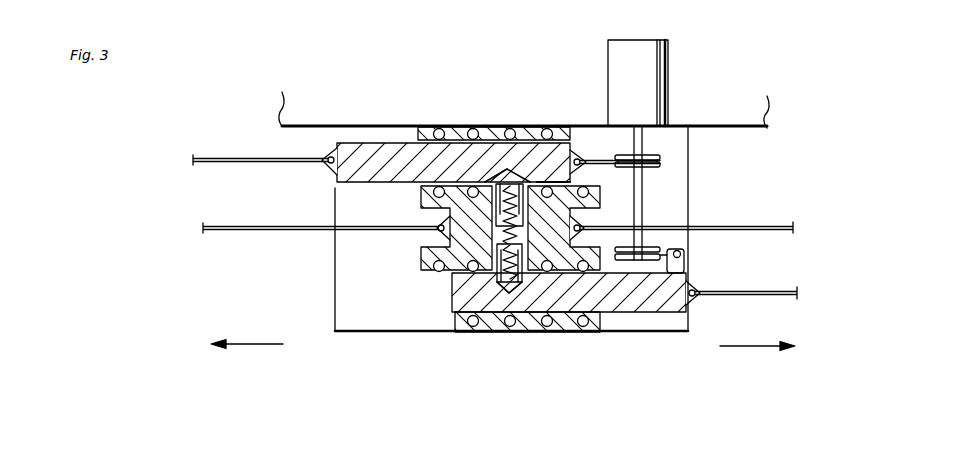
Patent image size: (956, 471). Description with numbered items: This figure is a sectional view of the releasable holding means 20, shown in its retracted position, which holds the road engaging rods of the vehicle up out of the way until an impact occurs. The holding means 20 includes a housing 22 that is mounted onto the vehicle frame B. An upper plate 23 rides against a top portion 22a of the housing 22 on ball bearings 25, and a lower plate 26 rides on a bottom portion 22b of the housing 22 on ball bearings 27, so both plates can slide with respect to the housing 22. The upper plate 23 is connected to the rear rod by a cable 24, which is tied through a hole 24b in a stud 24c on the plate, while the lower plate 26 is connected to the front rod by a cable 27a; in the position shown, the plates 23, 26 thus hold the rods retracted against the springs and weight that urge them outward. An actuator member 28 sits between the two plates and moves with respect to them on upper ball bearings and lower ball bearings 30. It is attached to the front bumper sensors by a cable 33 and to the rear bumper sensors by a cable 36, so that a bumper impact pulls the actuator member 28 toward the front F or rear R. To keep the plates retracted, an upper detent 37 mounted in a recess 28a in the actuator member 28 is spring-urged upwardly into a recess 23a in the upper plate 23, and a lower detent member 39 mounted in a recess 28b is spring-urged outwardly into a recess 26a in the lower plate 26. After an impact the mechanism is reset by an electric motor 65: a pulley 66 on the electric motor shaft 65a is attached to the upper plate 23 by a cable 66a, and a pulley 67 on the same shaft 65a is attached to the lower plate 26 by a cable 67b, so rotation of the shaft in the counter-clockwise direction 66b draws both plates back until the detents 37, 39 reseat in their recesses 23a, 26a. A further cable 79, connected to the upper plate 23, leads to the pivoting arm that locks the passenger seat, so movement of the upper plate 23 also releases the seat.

The holding means 20 is at (566, 28).
The vehicle frame B is at (748, 128).
The electric motor 65 is at (637, 40).
The electric motor shaft 65a is at (648, 185).
The pulley 66 is at (662, 159).
The cable 66a is at (592, 158).
The counter-clockwise direction 66b is at (622, 188).
The pulley 67 is at (662, 243).
The cable 67b is at (685, 265).
The housing 22 is at (356, 333).
The top portion of housing 22a is at (492, 127).
The bottom portion of housing 22b is at (557, 332).
The upper plate 23 is at (366, 145).
The recess 23a is at (547, 180).
The cable 24 is at (218, 156).
The hole 24b is at (330, 156).
The stud 24c is at (322, 168).
The ball bearings 25 is at (443, 127).
The lower plate 26 is at (641, 300).
The recess 26a is at (522, 332).
The ball bearings 27 is at (562, 332).
The cable 27a is at (758, 292).
The actuator member 28 is at (420, 197).
The recess 28a is at (492, 182).
The recess 28b is at (493, 278).
The lower ball bearings 30 is at (435, 270).
The cable 33 is at (785, 226).
The cable 36 is at (240, 225).
The upper detent 37 is at (528, 184).
The lower detent member 39 is at (487, 332).
The cable 79 is at (421, 207).
The rearward direction R is at (255, 346).
The forward direction F is at (757, 348).